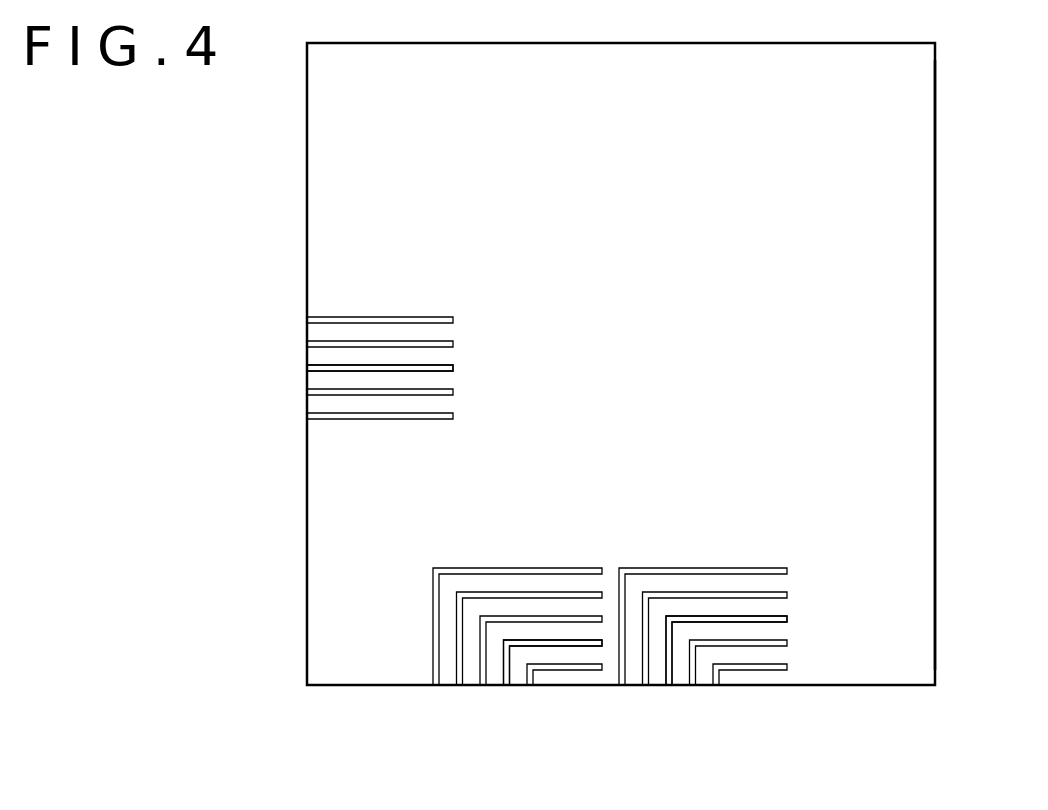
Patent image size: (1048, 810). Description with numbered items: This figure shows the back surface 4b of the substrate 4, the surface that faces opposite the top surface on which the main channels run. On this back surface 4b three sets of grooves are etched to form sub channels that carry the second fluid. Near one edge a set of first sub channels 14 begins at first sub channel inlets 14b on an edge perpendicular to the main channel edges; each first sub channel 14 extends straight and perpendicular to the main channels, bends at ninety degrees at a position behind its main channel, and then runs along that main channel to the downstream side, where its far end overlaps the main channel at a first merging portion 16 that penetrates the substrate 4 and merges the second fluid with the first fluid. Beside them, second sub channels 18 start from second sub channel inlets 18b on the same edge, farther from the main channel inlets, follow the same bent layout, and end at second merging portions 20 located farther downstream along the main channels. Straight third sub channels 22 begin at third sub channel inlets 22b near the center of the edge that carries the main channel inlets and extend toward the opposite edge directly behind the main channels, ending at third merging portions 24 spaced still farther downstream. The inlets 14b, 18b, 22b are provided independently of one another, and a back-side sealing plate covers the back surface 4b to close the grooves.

The substrate 4 is at (1020, 44).
The back surface 4b is at (923, 177).
The third sub channel 22 is at (340, 421).
The third sub channel inlet 22b is at (307, 320).
The third merging portion 24 is at (442, 366).
The first sub channel 14 is at (432, 642).
The first sub channel inlet 14b is at (530, 685).
The first merging portion 16 is at (583, 648).
The second sub channel 18 is at (616, 637).
The second sub channel inlet 18b is at (716, 685).
The second merging portion 20 is at (778, 622).